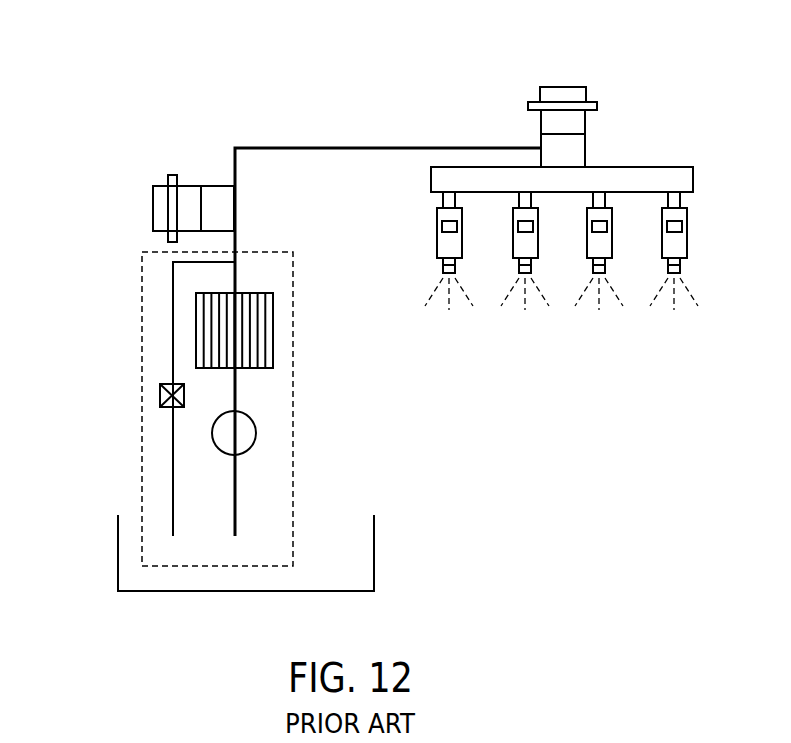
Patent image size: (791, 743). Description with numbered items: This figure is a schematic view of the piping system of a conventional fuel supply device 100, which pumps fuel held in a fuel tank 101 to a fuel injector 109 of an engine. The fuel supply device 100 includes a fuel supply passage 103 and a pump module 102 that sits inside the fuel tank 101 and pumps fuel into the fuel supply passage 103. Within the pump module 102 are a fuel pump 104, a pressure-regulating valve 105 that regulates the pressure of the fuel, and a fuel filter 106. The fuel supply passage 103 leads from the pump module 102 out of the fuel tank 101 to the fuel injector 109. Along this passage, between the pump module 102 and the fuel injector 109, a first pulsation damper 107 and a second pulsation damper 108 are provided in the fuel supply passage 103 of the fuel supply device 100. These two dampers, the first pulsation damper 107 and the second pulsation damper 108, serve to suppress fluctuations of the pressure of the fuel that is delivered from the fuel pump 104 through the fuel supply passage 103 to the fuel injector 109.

The fuel supply device 100 is at (192, 123).
The fuel tank 101 is at (348, 559).
The pump module 102 is at (142, 309).
The fuel supply passage 103 is at (299, 147).
The fuel pump 104 is at (257, 434).
The pressure-regulating valve 105 is at (160, 396).
The fuel filter 106 is at (257, 342).
The first pulsation damper 107 is at (189, 208).
The second pulsation damper 108 is at (562, 120).
The fuel injector 109 is at (638, 158).